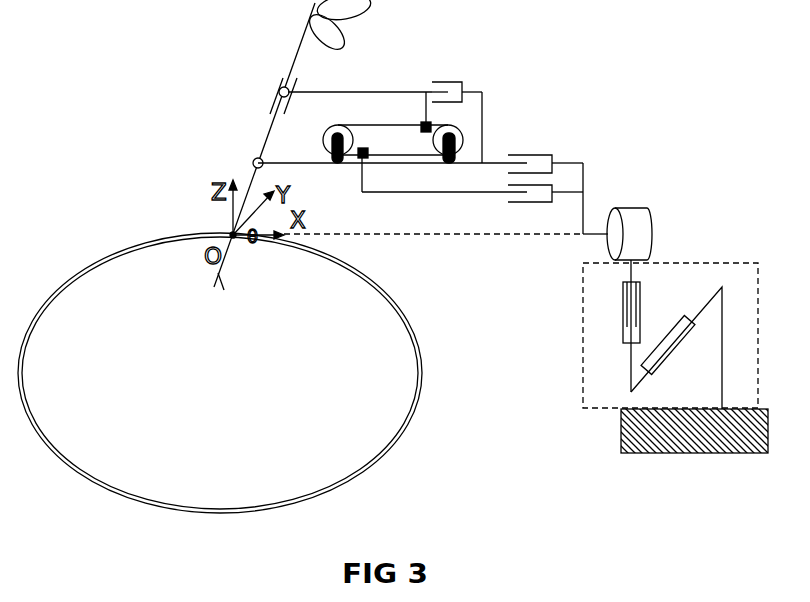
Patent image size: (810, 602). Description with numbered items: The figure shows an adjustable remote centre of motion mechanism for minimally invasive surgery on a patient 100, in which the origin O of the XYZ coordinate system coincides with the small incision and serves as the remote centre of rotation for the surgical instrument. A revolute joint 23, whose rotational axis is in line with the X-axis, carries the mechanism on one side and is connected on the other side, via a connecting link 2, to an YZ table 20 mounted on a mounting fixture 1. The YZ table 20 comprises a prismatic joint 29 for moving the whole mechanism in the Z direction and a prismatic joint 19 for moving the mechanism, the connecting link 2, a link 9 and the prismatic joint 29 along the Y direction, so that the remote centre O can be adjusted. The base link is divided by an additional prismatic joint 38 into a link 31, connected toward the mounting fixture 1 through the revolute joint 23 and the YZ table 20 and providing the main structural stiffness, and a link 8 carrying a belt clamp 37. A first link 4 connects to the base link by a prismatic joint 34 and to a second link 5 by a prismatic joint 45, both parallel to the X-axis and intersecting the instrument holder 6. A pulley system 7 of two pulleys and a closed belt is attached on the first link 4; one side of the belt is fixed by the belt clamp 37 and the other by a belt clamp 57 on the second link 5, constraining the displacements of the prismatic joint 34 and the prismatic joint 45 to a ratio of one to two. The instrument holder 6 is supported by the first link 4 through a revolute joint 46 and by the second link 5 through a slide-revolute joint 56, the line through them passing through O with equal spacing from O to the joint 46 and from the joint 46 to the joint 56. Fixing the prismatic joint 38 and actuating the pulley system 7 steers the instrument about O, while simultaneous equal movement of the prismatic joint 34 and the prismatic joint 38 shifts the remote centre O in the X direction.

The mounting fixture 1 is at (621, 430).
The connecting link 2 is at (633, 274).
The first link 4 is at (307, 165).
The second link 5 is at (353, 92).
The instrument holder 6 is at (297, 52).
The pulley system 7 is at (322, 142).
The link 8 is at (418, 193).
The link 9 is at (631, 378).
The prismatic joint 19 is at (668, 358).
The YZ table 20 is at (690, 262).
The revolute joint 23 is at (625, 208).
The prismatic joint 29 is at (623, 340).
The link 31 is at (585, 182).
The prismatic joint 34 is at (520, 155).
The belt clamp 37 is at (362, 160).
The prismatic joint 38 is at (527, 202).
The prismatic joint 45 is at (447, 82).
The revolute joint 46 is at (254, 161).
The slide-revolute joint 56 is at (278, 94).
The belt clamp 57 is at (423, 120).
The patient 100 is at (231, 394).